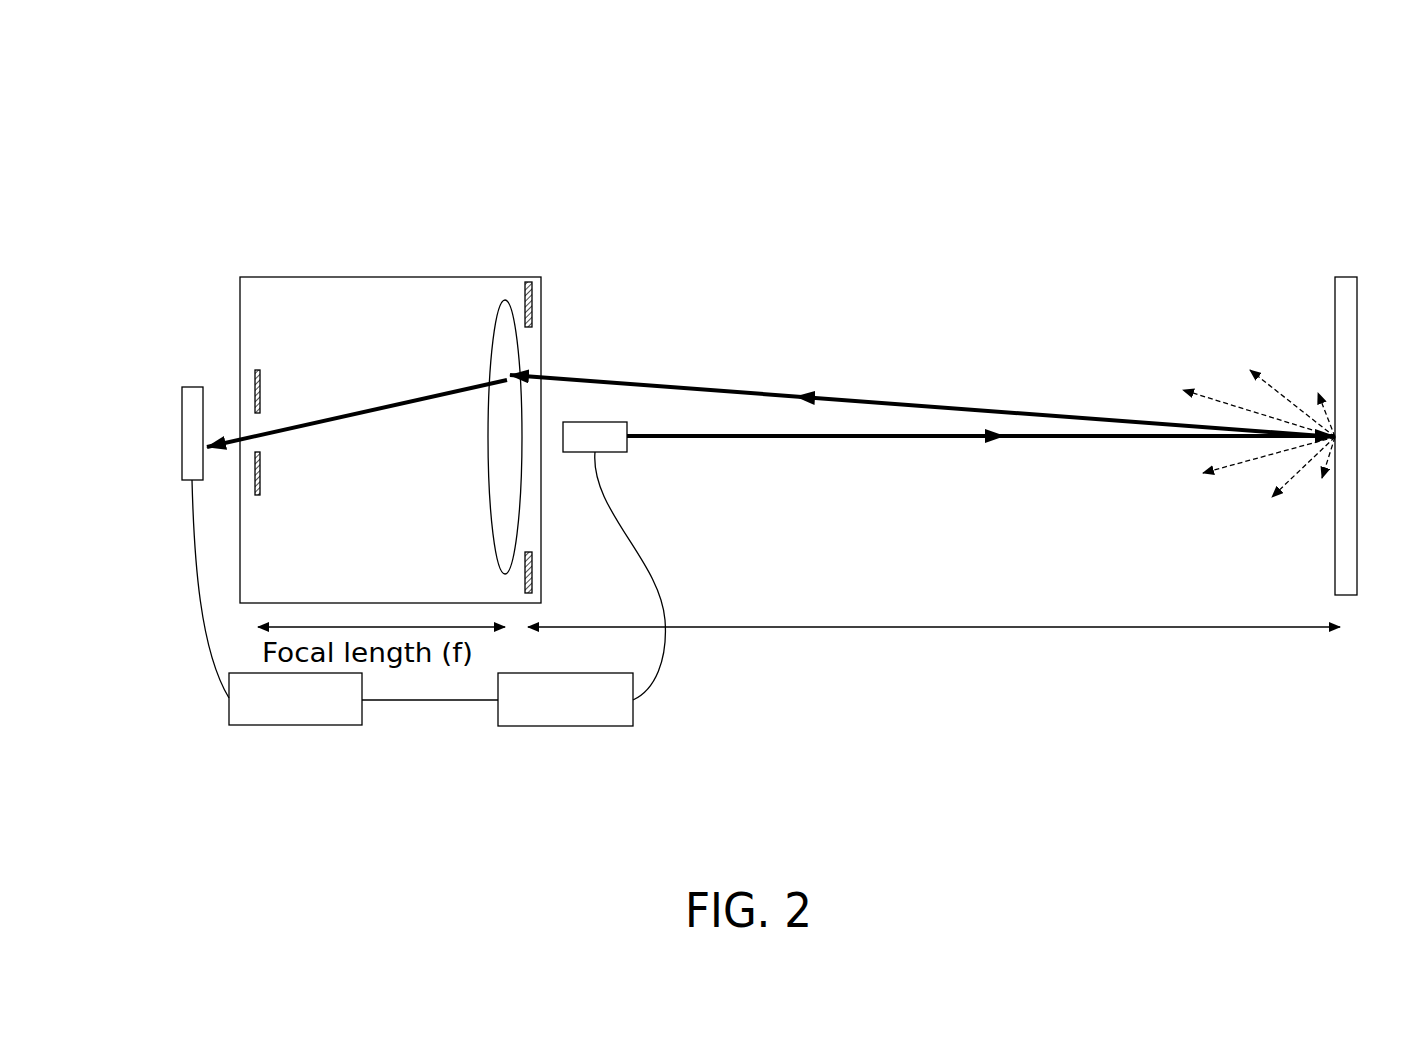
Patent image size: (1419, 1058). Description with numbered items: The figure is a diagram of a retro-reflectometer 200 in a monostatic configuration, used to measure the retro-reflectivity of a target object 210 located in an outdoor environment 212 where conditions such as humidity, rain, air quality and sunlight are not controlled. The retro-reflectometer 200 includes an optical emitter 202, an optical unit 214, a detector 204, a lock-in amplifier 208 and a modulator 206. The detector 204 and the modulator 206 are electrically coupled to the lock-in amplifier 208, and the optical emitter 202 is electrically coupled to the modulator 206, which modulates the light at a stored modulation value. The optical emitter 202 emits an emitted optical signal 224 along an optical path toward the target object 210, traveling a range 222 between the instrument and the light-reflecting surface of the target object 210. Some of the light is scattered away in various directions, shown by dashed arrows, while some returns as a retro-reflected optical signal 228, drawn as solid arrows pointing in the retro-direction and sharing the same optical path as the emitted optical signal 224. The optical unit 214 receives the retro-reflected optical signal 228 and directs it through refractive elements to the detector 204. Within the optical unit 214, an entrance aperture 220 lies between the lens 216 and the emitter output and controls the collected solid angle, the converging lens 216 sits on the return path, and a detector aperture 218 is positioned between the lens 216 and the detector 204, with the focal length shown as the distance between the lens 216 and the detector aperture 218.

The retro-reflectometer 200 is at (112, 107).
The optical emitter 202 is at (603, 458).
The optical detector 204 is at (136, 542).
The modulator 206 is at (599, 727).
The lock-in amplifier 208 is at (347, 727).
The target object 210 is at (1295, 412).
The outdoor environment 212 is at (737, 146).
The optical unit 214 is at (464, 275).
The lens 216 is at (490, 317).
The detector aperture 218 is at (250, 388).
The entrance aperture 220 is at (534, 299).
The range 222 is at (934, 645).
The emitted optical signal 224 is at (987, 450).
The retro-reflected optical signal 228 is at (1010, 393).